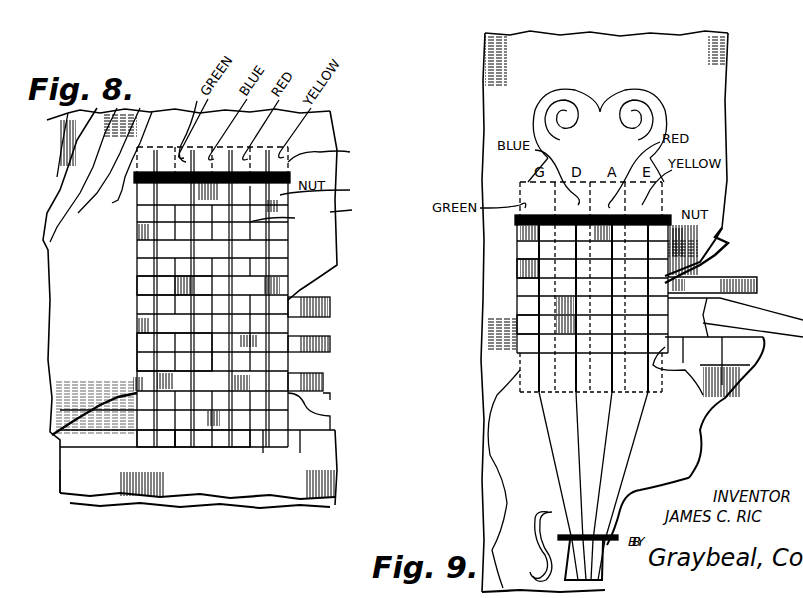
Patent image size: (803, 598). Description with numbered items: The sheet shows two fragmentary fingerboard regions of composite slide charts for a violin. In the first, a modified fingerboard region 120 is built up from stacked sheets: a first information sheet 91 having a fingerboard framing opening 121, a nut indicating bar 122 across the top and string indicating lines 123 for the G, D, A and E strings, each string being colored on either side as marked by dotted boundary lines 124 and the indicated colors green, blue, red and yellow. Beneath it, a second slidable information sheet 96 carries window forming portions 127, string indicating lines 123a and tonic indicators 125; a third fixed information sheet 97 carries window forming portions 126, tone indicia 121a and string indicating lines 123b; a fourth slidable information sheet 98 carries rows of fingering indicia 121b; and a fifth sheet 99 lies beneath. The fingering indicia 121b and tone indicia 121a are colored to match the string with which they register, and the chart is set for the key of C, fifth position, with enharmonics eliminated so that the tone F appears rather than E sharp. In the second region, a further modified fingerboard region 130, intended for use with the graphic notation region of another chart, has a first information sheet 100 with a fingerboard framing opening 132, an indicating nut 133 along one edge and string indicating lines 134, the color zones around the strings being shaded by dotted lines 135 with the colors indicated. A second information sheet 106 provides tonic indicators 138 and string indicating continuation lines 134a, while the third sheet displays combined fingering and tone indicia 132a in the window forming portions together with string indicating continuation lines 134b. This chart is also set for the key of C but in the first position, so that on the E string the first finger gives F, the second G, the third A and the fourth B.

In FIG. 8, the fifth sheet 99 is at (66, 117).
In FIG. 8, the fourth slidable information sheet 98 is at (56, 146).
In FIG. 8, the third fixed information sheet 97 is at (52, 180).
In FIG. 8, the second slidable information sheet 96 is at (49, 214).
In FIG. 8, the nut indicating bar 122 is at (120, 200).
In FIG. 8, the string indicating lines 123 is at (180, 122).
In FIG. 8, the fingerboard region 120 is at (325, 130).
In FIG. 8, the dotted boundary lines 124 is at (335, 151).
In FIG. 8, the fingerboard framing opening 121 is at (331, 190).
In FIG. 8, the first information sheet 91 is at (352, 212).
In FIG. 8, the window forming portions 126 is at (289, 219).
In FIG. 8, the tonic indicators 125 is at (137, 288).
In FIG. 8, the fingering indicia 121b is at (142, 352).
In FIG. 8, the string indicating lines 123a is at (330, 342).
In FIG. 8, the window forming portions 127 is at (330, 416).
In FIG. 8, the tone indicia 121a is at (137, 440).
In FIG. 8, the string indicating lines 123b is at (160, 445).
In FIG. 9, the fingerboard region 130 is at (628, 58).
In FIG. 9, the dotted lines 135 is at (520, 186).
In FIG. 9, the string indicating lines 134 is at (675, 172).
In FIG. 9, the first information sheet 100 is at (712, 226).
In FIG. 9, the indicating nut 133 is at (688, 249).
In FIG. 9, the combined fingering and tone indicia 132a is at (517, 250).
In FIG. 9, the string indicating continuation lines 134a is at (517, 270).
In FIG. 9, the tonic indicators 138 is at (517, 330).
In FIG. 9, the string indicating continuation lines 134b is at (700, 272).
In FIG. 9, the second information sheet 106 is at (757, 288).
In FIG. 9, the fingerboard framing opening 132 is at (745, 369).